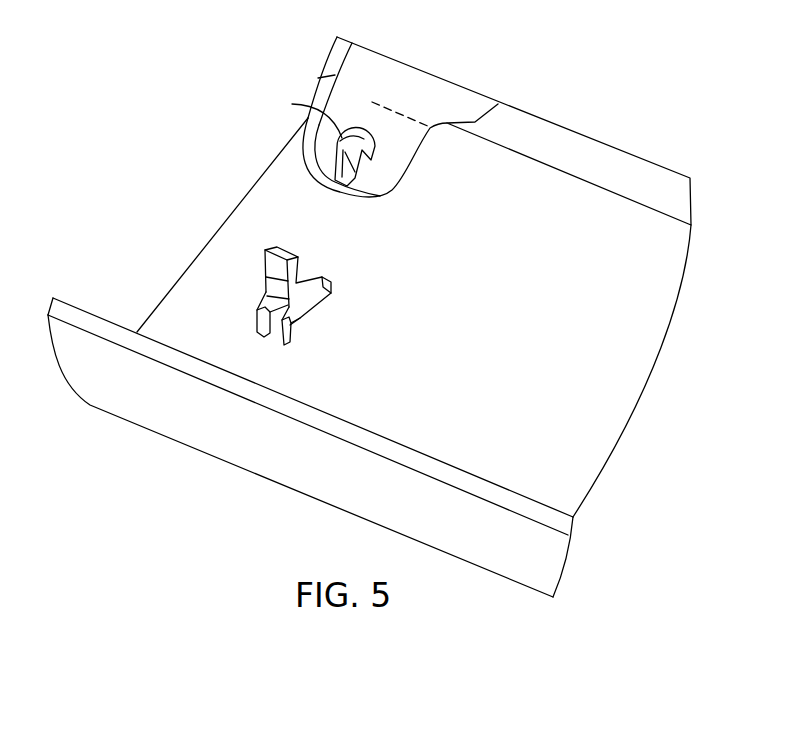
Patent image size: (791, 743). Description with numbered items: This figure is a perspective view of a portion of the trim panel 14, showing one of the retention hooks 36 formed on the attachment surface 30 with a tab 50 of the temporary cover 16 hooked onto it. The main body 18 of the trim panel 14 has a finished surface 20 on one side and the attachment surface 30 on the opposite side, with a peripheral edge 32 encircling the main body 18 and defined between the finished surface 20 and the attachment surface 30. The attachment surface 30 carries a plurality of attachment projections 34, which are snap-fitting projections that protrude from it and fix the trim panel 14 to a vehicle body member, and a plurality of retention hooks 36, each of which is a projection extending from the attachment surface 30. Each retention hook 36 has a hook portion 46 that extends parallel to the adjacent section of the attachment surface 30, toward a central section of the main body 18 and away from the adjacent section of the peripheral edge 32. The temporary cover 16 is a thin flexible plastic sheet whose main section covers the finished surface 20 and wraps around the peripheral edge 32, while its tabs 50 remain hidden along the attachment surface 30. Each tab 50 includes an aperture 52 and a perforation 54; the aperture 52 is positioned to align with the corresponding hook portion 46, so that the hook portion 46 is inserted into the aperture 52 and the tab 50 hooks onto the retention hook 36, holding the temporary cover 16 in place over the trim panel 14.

The trim panel 14 is at (186, 209).
The temporary cover 16 is at (445, 98).
The main body 18 is at (175, 316).
The finished surface 20 is at (150, 397).
The attachment surface 30 is at (275, 188).
The peripheral edge 32 is at (187, 263).
The attachment projection 34 is at (300, 277).
The retention hook 36 is at (350, 185).
The hook portion 46 is at (337, 143).
The tab 50 is at (312, 173).
The aperture 52 is at (320, 108).
The perforation 54 is at (372, 102).